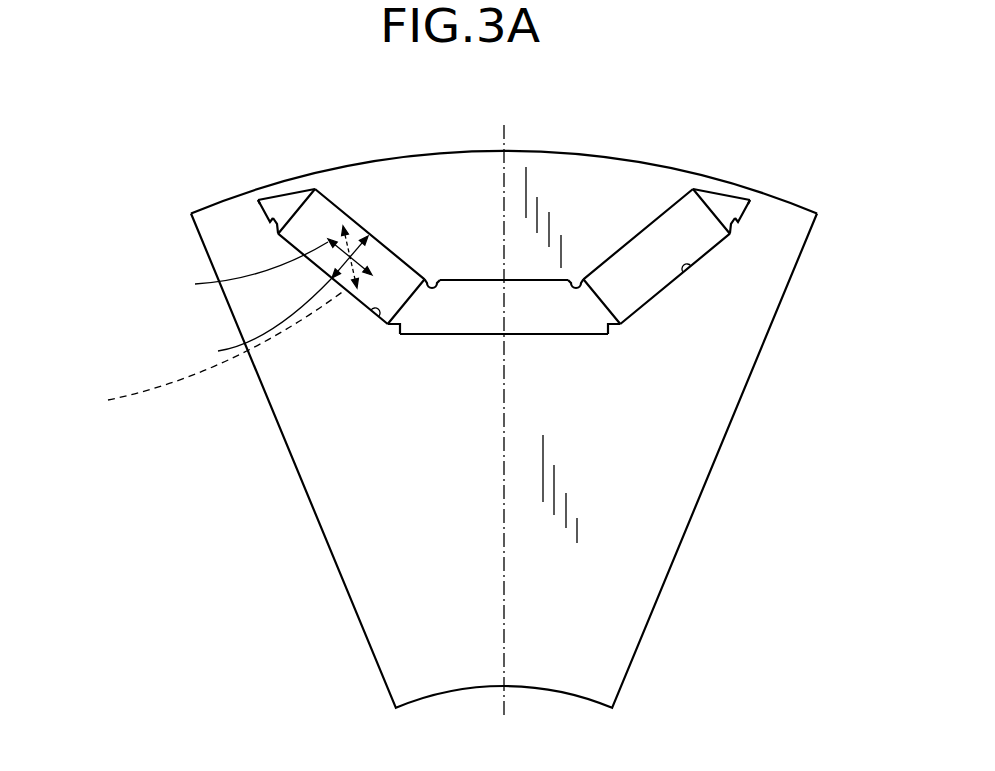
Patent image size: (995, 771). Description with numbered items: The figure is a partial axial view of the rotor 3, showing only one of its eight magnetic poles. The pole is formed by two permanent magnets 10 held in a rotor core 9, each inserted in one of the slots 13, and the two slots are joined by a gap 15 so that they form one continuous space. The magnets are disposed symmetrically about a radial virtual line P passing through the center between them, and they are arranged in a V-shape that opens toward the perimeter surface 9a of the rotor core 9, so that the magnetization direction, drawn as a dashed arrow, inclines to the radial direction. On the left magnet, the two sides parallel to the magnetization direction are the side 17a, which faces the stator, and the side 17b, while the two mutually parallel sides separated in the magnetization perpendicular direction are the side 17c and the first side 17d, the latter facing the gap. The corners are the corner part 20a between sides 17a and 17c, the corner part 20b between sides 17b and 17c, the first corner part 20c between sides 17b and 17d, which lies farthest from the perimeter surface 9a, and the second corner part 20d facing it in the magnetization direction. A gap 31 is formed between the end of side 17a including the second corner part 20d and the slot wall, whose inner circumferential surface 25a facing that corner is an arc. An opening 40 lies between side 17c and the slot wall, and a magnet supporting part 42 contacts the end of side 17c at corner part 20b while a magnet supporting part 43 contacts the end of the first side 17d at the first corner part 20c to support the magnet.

The rotor 3 is at (782, 135).
The rotor core 9 is at (705, 425).
The perimeter surface 9a is at (787, 202).
The permanent magnet 10 is at (360, 300).
The slot 13 is at (378, 316).
The gap 15 is at (479, 318).
The side 17a is at (417, 270).
The side 17b is at (278, 236).
The side 17c is at (294, 196).
The first side 17d is at (410, 300).
The corner part 20a is at (313, 186).
The corner part 20b is at (270, 226).
The first corner part 20c is at (387, 325).
The second corner part 20d is at (430, 290).
The inner circumferential surface 25a is at (440, 278).
The gap 31 is at (423, 277).
The opening 40 is at (272, 226).
The magnet supporting part 42 is at (262, 208).
The magnet supporting part 43 is at (400, 327).
The virtual line P is at (503, 657).